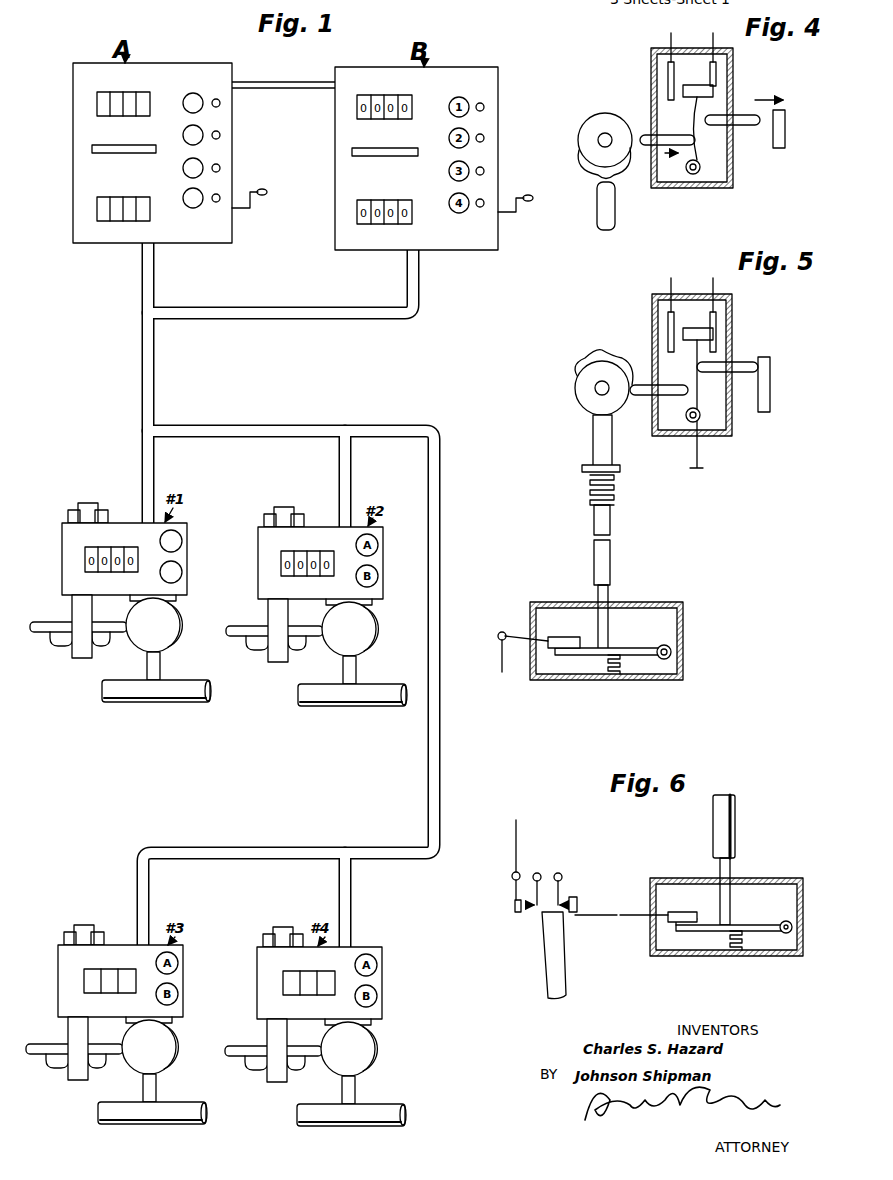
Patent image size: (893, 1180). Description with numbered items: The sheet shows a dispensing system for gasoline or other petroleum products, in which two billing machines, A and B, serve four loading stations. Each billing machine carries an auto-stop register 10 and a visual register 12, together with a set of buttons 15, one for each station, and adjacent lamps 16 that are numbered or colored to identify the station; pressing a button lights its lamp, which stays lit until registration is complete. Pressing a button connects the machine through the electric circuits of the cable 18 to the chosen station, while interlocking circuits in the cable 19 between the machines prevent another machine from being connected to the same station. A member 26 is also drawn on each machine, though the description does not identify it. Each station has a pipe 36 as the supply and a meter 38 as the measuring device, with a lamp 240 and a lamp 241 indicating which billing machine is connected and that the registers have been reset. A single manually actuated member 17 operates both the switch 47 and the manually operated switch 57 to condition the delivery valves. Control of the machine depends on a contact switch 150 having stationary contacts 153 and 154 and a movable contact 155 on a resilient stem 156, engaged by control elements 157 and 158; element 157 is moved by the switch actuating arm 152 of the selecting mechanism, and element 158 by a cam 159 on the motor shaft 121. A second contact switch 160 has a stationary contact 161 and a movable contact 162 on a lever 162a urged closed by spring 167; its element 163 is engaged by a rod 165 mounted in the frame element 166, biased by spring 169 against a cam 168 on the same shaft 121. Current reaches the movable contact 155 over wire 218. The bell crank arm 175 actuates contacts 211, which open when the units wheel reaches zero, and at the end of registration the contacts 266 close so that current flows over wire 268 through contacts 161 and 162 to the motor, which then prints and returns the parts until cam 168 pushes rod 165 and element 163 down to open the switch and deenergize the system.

In FIG. 1, the auto-stop register 10 is at (80, 208).
In FIG. 1, the visual register 12 is at (84, 113).
In FIG. 1, the buttons 15 is at (219, 132).
In FIG. 1, the lamps 16 is at (197, 94).
In FIG. 1, the manually actuated member 17 is at (93, 497).
In FIG. 1, the cable 18 is at (220, 322).
In FIG. 1, the cable 19 is at (300, 82).
In FIG. 1, the crank handle 26 is at (262, 205).
In FIG. 1, the pipe 36 is at (165, 700).
In FIG. 1, the meter 38 is at (154, 623).
In FIG. 1, the switch 47 is at (68, 513).
In FIG. 1, the manually operated switch 57 is at (108, 516).
In FIG. 1, the lamp 240 is at (183, 538).
In FIG. 1, the lamp 241 is at (183, 568).
In FIG. 5, the shaft 121 is at (595, 388).
In FIG. 4, the contact switch 150 is at (651, 52).
In FIG. 5, the contact switch 150 is at (652, 296).
In FIG. 4, the switch actuating arm 152 is at (785, 124).
In FIG. 5, the switch actuating arm 152 is at (770, 380).
In FIG. 4, the stationary contact 153 is at (668, 72).
In FIG. 5, the stationary contact 153 is at (668, 316).
In FIG. 4, the stationary contact 154 is at (716, 92).
In FIG. 5, the stationary contact 154 is at (716, 334).
In FIG. 4, the movable contact 155 is at (688, 85).
In FIG. 5, the movable contact 155 is at (700, 330).
In FIG. 4, the resilient leaf or stem 156 is at (700, 160).
In FIG. 5, the resilient leaf or stem 156 is at (700, 410).
In FIG. 4, the control element 157 is at (752, 128).
In FIG. 5, the control element 157 is at (750, 362).
In FIG. 4, the control element 158 is at (676, 127).
In FIG. 5, the control element 158 is at (638, 383).
In FIG. 4, the cam 159 is at (577, 158).
In FIG. 5, the cam 159 is at (582, 363).
In FIG. 5, the second contact switch 160 is at (670, 602).
In FIG. 6, the second contact switch 160 is at (656, 876).
In FIG. 5, the stationary contact 161 is at (570, 637).
In FIG. 6, the stationary contact 161 is at (690, 903).
In FIG. 5, the movable contact 162 is at (553, 660).
In FIG. 6, the movable contact 162 is at (675, 935).
In FIG. 5, the lever 162a is at (640, 665).
In FIG. 6, the lever 162a is at (786, 940).
In FIG. 5, the element 163 is at (598, 592).
In FIG. 6, the element 163 is at (732, 878).
In FIG. 5, the rod 165 is at (593, 438).
In FIG. 6, the rod 165 is at (728, 843).
In FIG. 5, the frame element 166 is at (582, 468).
In FIG. 5, the spring 167 is at (610, 676).
In FIG. 6, the spring 167 is at (733, 950).
In FIG. 4, the cam 168 is at (594, 118).
In FIG. 5, the cam 168 is at (588, 405).
In FIG. 5, the spring 169 is at (588, 490).
In FIG. 6, the bell crank arm 175 is at (545, 958).
In FIG. 6, the contacts 211 is at (512, 905).
In FIG. 5, the wire 218 is at (700, 457).
In FIG. 6, the contacts 266 is at (575, 896).
In FIG. 6, the wire 268 is at (598, 917).